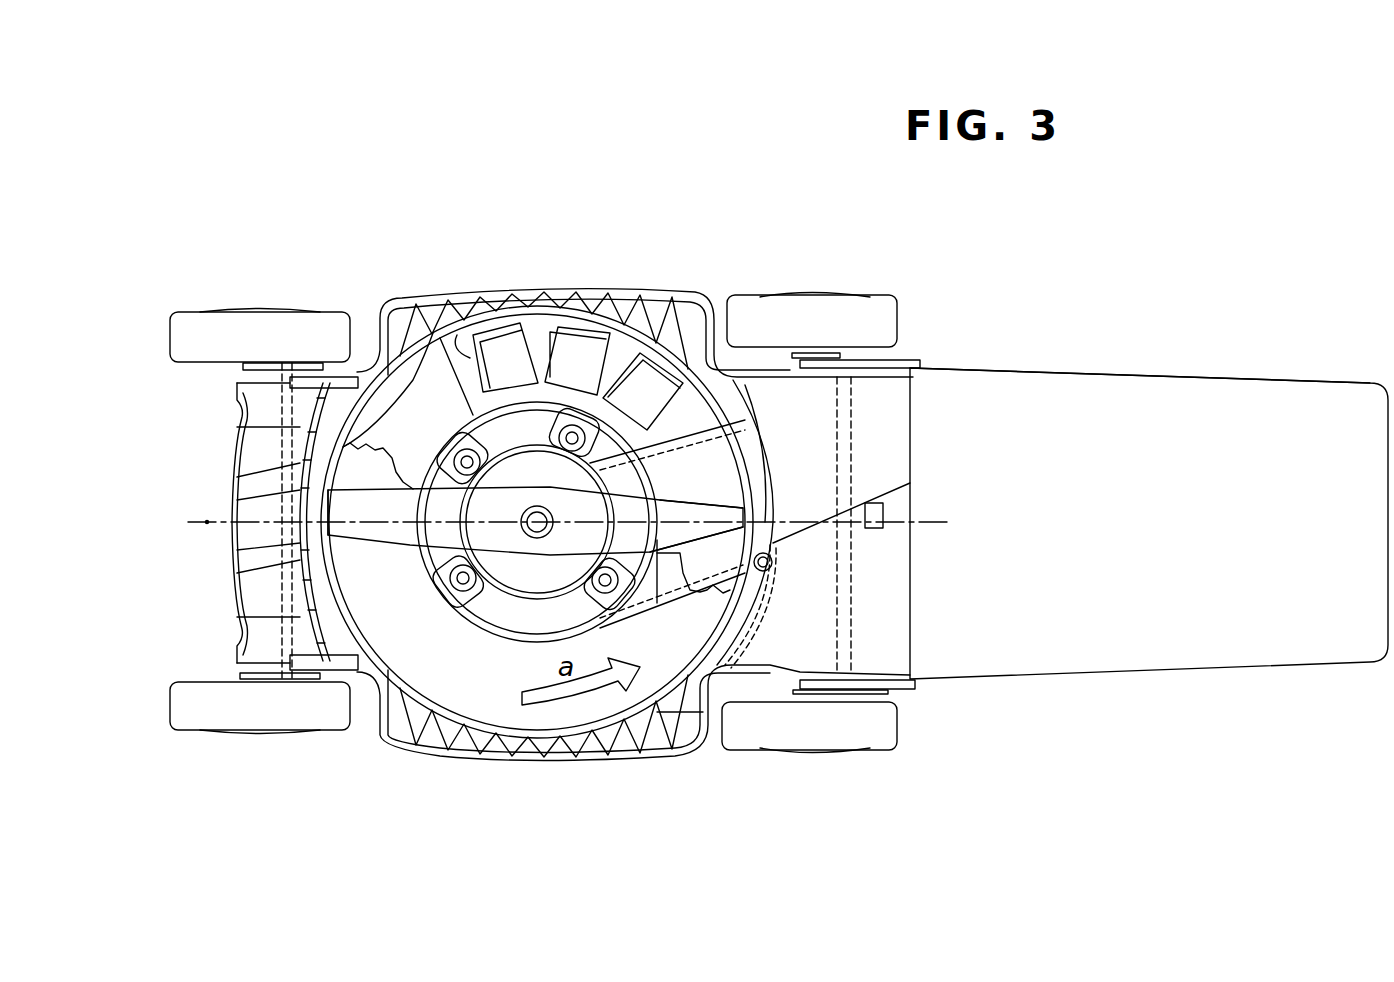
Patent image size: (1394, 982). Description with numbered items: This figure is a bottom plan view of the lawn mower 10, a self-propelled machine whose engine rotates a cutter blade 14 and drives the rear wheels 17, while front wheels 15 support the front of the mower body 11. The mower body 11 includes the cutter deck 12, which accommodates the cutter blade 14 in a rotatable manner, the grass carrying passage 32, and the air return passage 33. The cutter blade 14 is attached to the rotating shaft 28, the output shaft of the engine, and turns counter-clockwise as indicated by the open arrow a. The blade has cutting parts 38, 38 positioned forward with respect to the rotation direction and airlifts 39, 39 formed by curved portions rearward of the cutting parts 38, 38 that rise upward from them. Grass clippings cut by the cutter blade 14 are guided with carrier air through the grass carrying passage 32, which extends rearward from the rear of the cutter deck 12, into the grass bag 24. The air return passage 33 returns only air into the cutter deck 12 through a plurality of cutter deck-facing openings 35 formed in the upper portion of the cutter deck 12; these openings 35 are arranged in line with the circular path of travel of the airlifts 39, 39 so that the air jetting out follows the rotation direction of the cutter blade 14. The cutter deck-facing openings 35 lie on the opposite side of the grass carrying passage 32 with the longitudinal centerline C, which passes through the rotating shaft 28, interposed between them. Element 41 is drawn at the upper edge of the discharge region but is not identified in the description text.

The lawn mower 10 is at (277, 132).
The mower body 11 is at (380, 305).
The cutter deck 12 is at (533, 276).
The cutter blade 14 is at (520, 545).
The front wheels 15 is at (235, 312).
The rear wheels 17 is at (882, 298).
The grass bag 24 is at (1132, 345).
The rotating shaft 28 is at (530, 575).
The grass carrying passage 32 is at (766, 631).
The air return passage 33 is at (687, 405).
The cutter deck-facing openings 35 is at (452, 330).
The cutting parts 38 is at (703, 497).
The airlifts 39 is at (362, 458).
The discharge duct 41 is at (1048, 372).
The longitudinal centerline C is at (207, 522).